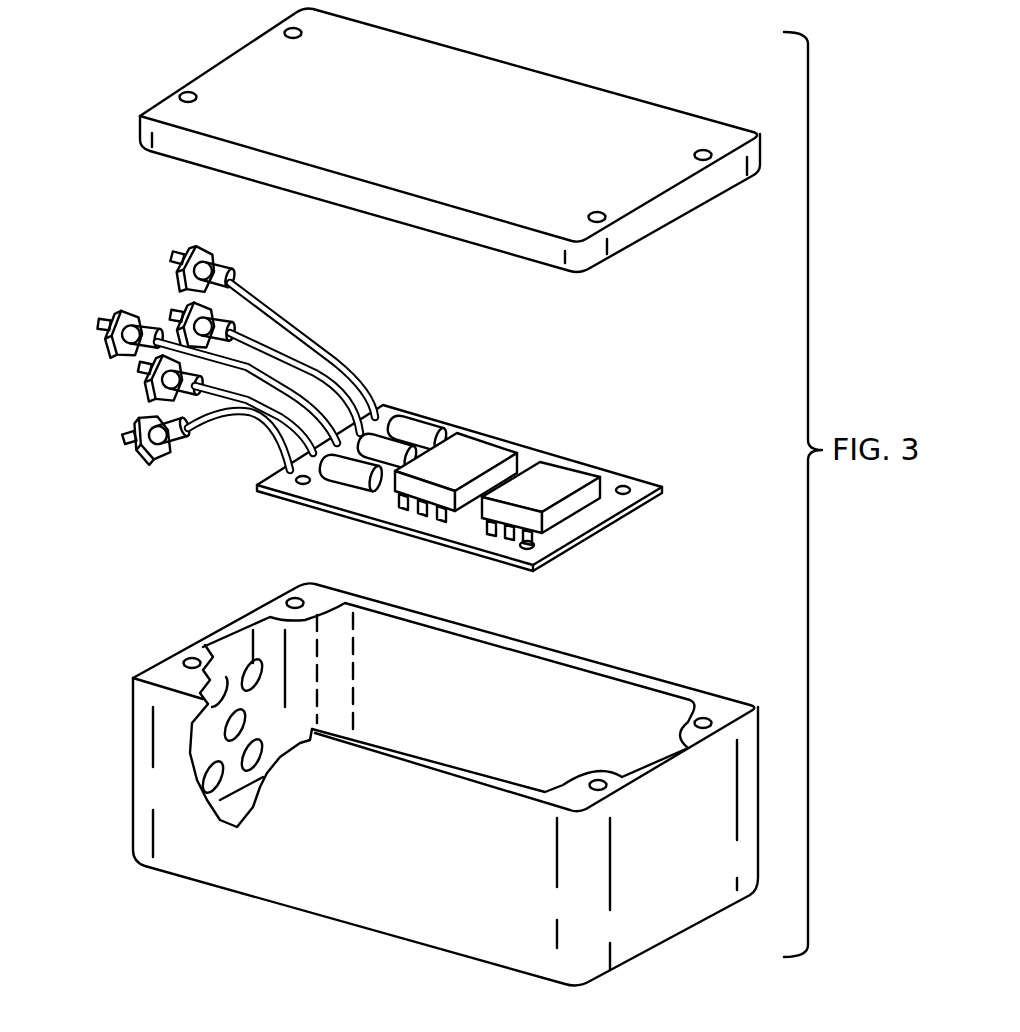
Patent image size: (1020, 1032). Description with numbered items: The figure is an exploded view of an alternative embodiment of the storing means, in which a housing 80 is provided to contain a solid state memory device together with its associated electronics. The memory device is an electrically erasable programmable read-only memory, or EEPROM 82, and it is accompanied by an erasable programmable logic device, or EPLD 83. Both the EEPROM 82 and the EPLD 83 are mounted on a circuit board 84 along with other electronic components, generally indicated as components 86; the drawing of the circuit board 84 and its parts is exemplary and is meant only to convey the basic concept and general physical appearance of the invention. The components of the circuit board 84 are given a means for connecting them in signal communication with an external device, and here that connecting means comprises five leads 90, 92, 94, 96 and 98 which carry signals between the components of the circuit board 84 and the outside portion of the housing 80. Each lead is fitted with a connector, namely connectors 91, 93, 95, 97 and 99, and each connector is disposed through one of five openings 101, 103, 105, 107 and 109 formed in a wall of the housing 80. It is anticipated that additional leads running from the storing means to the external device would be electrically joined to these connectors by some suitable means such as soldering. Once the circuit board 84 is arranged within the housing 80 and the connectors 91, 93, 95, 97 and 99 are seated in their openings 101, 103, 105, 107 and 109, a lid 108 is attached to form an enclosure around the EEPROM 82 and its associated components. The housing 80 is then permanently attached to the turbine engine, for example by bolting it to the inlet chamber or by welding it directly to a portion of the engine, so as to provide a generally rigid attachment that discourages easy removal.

The housing 80 is at (745, 768).
The EEPROM 82 is at (478, 453).
The EPLD 83 is at (560, 478).
The circuit board 84 is at (598, 513).
The electronic components 86 is at (432, 442).
The lead 90 is at (263, 335).
The connector 91 is at (183, 316).
The lead 92 is at (262, 447).
The connector 93 is at (148, 455).
The lead 94 is at (218, 396).
The connector 95 is at (152, 392).
The lead 96 is at (300, 370).
The connector 97 is at (112, 346).
The lead 98 is at (250, 290).
The connector 99 is at (188, 250).
The opening 101 is at (246, 662).
The opening 103 is at (240, 770).
The opening 105 is at (198, 778).
The opening 107 is at (185, 657).
The lid 108 is at (592, 98).
The opening 109 is at (198, 723).